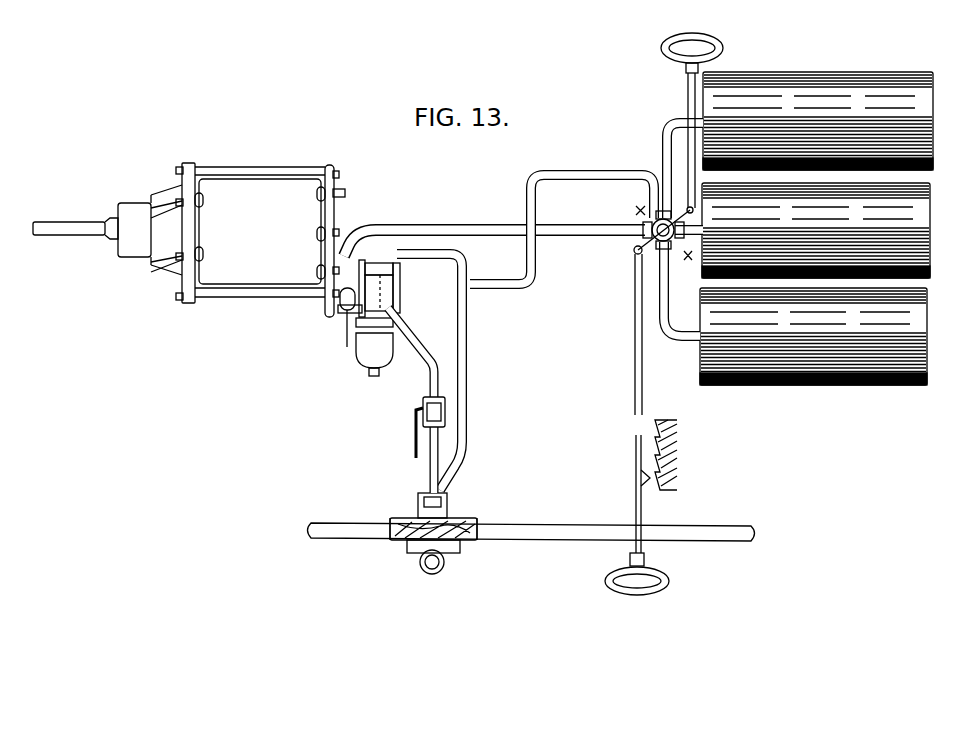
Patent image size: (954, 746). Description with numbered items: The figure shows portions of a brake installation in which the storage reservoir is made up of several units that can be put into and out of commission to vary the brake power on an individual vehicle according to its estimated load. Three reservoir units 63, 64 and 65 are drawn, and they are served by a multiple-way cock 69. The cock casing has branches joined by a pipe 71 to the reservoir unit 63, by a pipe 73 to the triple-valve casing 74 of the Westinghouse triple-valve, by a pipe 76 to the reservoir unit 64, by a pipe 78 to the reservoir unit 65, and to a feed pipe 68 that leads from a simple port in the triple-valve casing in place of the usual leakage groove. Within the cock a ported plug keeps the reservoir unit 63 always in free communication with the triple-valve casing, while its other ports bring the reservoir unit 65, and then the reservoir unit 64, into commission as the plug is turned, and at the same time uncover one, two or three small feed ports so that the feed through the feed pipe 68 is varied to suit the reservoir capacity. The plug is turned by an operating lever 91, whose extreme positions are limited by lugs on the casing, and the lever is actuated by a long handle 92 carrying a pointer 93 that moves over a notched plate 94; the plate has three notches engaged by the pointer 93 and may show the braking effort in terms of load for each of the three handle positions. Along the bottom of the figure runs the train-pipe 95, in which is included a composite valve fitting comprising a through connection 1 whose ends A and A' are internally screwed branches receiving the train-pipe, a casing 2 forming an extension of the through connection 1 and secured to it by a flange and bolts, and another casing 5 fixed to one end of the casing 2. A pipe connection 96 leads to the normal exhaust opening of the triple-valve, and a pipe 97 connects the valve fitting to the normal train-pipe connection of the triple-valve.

The pipe 73 is at (432, 224).
The feed pipe 68 is at (593, 170).
The pipe 76 is at (667, 120).
The reservoir unit 64 is at (818, 121).
The reservoir unit 63 is at (816, 230).
The reservoir unit 65 is at (813, 336).
The multiple-way cock 69 is at (640, 222).
The pipe 71 is at (690, 242).
The operating lever 91 is at (634, 252).
The pipe 78 is at (659, 326).
The triple-valve casing 74 is at (340, 300).
The pipe 97 is at (430, 380).
The pipe connection 96 is at (468, 388).
The long handle 92 is at (634, 405).
The notched plate 94 is at (672, 468).
The pointer 93 is at (640, 480).
The train-pipe 95 is at (341, 523).
The casing 2 is at (418, 500).
The through connection 1 is at (446, 519).
The end A is at (376, 548).
The end A' is at (496, 548).
The casing 5 is at (441, 571).